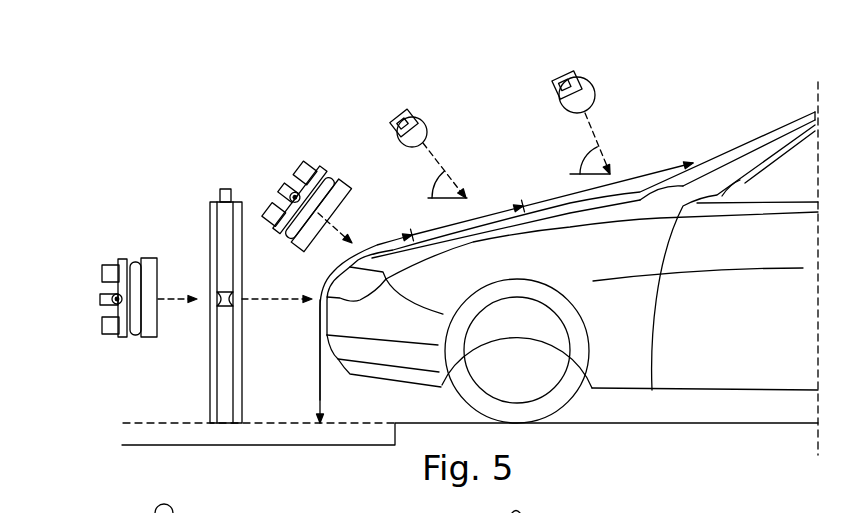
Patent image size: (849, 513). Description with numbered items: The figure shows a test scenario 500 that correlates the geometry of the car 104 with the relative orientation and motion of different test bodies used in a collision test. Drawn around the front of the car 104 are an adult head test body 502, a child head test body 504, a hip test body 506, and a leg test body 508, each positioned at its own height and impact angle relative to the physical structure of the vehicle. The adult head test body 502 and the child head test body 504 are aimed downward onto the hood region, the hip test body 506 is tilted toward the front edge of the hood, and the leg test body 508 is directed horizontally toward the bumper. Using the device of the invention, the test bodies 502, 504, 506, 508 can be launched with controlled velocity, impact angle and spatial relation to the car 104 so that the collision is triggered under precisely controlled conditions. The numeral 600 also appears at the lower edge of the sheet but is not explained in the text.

The test scenario 500 is at (103, 78).
The adult head test body 502 is at (558, 73).
The child head test body 504 is at (400, 117).
The hip test body 506 is at (277, 167).
The leg test body 508 is at (107, 260).
The car 104 is at (787, 166).
The element of following figure 600 is at (217, 512).